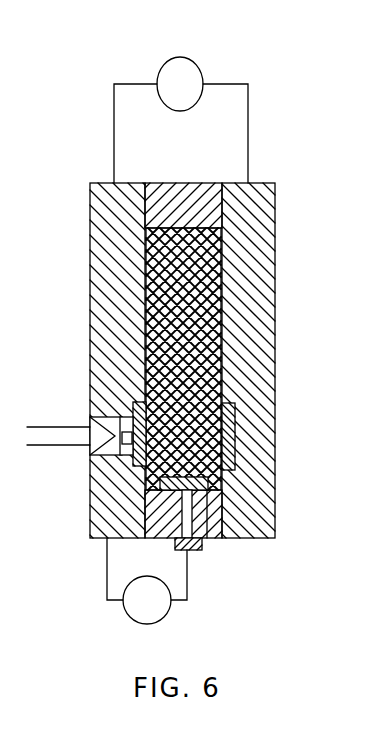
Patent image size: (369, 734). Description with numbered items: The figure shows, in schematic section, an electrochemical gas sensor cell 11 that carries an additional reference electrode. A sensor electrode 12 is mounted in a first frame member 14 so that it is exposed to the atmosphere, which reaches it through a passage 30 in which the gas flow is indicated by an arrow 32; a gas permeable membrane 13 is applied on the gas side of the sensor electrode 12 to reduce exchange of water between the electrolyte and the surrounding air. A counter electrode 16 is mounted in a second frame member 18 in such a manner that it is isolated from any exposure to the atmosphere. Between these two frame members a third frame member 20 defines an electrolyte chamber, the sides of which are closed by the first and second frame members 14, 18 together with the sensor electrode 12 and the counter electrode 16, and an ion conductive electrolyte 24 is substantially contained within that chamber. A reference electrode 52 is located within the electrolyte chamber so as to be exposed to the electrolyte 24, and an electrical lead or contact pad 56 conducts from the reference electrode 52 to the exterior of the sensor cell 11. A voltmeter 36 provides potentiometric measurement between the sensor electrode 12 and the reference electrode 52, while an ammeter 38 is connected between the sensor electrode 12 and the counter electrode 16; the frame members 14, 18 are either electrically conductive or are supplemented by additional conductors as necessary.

The sensor cell 11 is at (268, 106).
The sensor electrode 12 is at (130, 464).
The gas permeable membrane 13 is at (90, 449).
The first frame member 14 is at (92, 265).
The counter electrode 16 is at (227, 433).
The second frame member 18 is at (265, 251).
The third frame member 20 is at (223, 540).
The ion conductive electrolyte 24 is at (210, 352).
The passage 30 is at (91, 413).
The arrow 32 is at (90, 424).
The voltmeter 36 is at (138, 624).
The ammeter 38 is at (187, 58).
The reference electrode 52 is at (207, 541).
The electrical lead or contact pad 56 is at (175, 546).